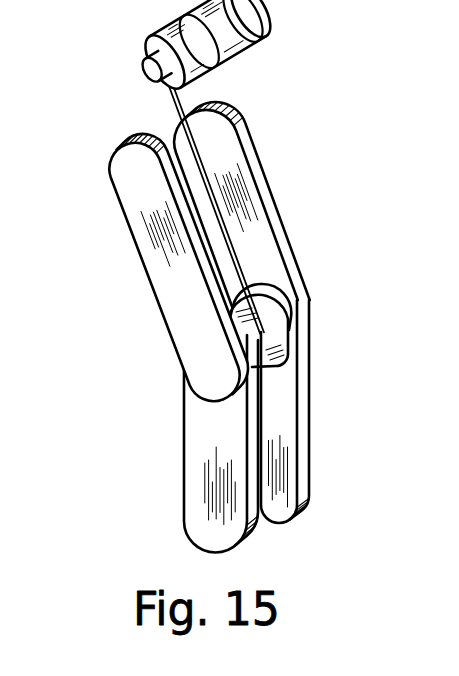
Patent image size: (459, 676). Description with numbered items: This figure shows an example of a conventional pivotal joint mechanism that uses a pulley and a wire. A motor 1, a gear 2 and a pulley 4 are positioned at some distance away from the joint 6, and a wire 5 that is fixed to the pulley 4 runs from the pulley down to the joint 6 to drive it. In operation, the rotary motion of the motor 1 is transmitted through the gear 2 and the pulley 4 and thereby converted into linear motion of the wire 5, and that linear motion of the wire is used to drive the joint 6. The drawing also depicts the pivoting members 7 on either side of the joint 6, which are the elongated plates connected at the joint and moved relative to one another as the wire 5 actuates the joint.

The motor 1 is at (242, 68).
The gear 2 is at (195, 43).
The pulley 4 is at (168, 68).
The wire 5 is at (202, 163).
The joint 6 is at (270, 338).
The hinge plates 7 is at (185, 142).